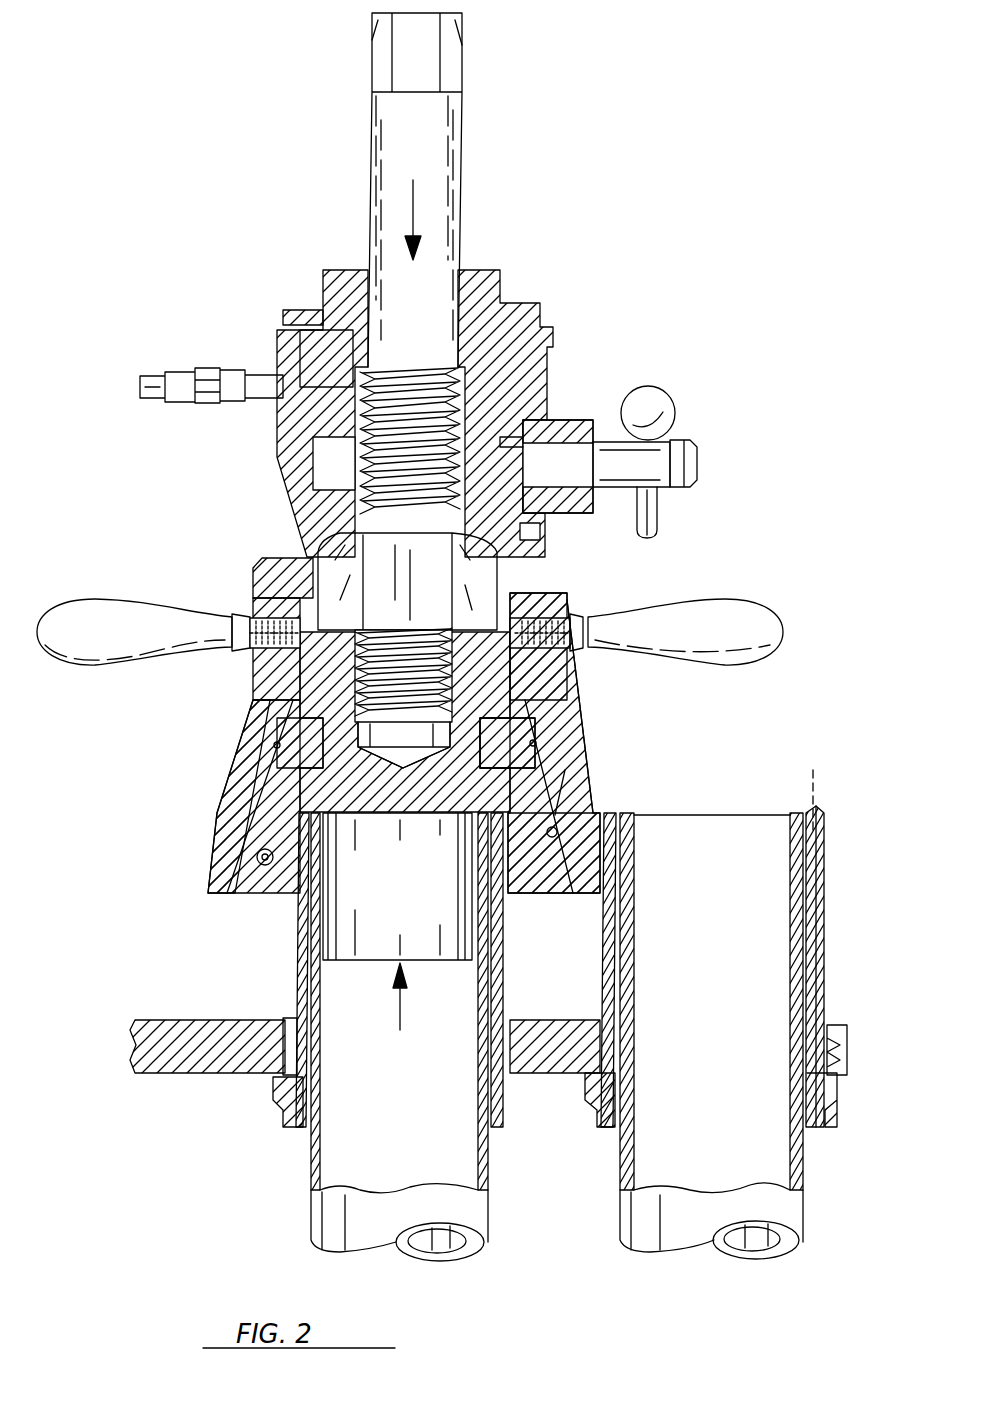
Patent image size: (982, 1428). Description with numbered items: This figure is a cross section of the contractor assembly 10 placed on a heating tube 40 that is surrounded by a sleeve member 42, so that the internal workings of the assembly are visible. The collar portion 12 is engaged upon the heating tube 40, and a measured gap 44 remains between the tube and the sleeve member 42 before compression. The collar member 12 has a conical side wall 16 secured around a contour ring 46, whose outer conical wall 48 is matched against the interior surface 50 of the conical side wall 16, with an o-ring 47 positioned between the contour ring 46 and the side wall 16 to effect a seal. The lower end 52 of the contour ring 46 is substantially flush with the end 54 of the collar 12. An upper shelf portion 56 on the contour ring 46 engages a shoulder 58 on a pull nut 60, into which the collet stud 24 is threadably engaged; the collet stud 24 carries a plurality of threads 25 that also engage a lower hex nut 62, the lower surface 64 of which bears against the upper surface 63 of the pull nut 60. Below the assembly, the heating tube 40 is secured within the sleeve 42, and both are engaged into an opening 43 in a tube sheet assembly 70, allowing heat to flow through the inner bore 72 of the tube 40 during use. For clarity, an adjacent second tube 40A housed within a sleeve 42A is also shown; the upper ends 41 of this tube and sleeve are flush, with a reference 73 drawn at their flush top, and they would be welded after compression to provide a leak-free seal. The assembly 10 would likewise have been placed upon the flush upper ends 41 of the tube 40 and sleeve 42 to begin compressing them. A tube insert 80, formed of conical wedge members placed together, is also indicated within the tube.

The contractor assembly 10 is at (570, 175).
The collar portion 12 is at (215, 716).
The conical side wall 16 is at (580, 735).
The collet stud 24 is at (432, 128).
The threads 25 is at (350, 462).
The heating tube 40 is at (300, 935).
The second tube 40A is at (805, 968).
The upper ends 41 is at (555, 818).
The sleeve member 42 is at (300, 905).
The second sleeve 42A is at (828, 882).
The opening 43 is at (293, 1015).
The measured gap 44 is at (496, 1000).
The contour ring 46 is at (255, 820).
The o-ring 47 is at (540, 745).
The outer conical wall 48 is at (252, 765).
The interior surface 50 is at (590, 813).
The lower end 52 is at (545, 895).
The end 54 is at (213, 893).
The upper shelf portion 56 is at (545, 740).
The shoulder 58 is at (300, 700).
The pull nut 60 is at (315, 650).
The lower hex nut 62 is at (499, 553).
The upper surface 63 is at (313, 600).
The lower surface 64 is at (520, 627).
The tube sheet assembly 70 is at (185, 1055).
The inner bore 72 is at (400, 1032).
The axis 73 is at (791, 796).
The tube insert 80 is at (397, 886).